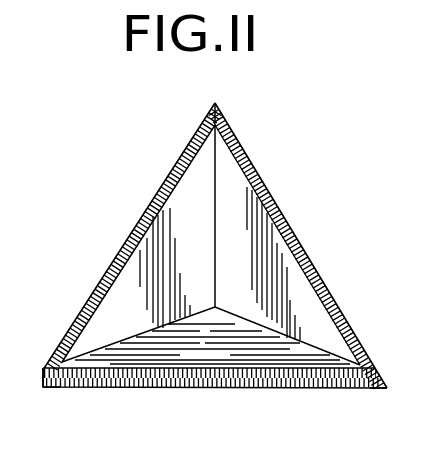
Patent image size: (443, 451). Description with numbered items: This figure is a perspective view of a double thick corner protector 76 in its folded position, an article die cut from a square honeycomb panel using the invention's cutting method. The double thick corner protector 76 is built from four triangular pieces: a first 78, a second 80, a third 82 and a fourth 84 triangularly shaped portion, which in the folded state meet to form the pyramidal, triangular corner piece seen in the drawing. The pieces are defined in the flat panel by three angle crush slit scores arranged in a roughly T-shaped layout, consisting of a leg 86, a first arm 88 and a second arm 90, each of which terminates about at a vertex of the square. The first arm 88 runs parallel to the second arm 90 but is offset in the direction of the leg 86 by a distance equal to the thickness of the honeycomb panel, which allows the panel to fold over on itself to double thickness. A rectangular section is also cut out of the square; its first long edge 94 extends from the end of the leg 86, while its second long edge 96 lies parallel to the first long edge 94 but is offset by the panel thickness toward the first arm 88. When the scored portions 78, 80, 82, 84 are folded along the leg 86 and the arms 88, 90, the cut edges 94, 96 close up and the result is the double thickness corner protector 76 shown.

The double thick corner protector 76 is at (256, 147).
The first triangularly shaped portion 78 is at (181, 350).
The second triangularly shaped portion 80 is at (153, 197).
The third triangularly shaped portion 82 is at (297, 241).
The fourth triangularly shaped portion 84 is at (222, 388).
The leg 86 is at (215, 195).
The first arm 88 is at (137, 342).
The second arm 90 is at (387, 388).
The first long edge 94 is at (45, 388).
The second long edge 96 is at (308, 344).